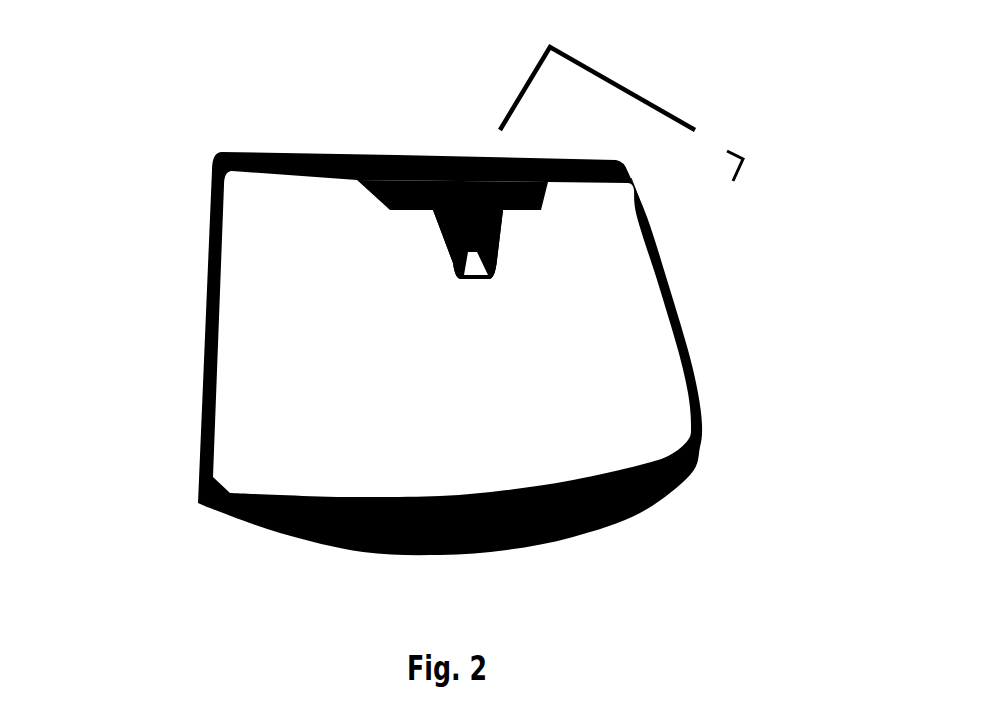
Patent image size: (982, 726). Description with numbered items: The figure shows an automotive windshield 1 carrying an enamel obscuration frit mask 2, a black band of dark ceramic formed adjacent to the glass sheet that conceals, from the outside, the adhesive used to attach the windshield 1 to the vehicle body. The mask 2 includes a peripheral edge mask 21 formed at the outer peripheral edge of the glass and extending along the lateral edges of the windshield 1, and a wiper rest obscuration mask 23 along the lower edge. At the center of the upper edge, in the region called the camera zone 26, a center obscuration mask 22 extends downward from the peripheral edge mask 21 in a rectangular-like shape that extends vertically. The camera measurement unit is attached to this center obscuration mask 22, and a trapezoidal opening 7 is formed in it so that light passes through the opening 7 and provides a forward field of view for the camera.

The automotive windshield 1 is at (710, 152).
The enamel obscuration frit mask 2 is at (212, 170).
The opening 7 is at (477, 257).
The peripheral edge mask 21 is at (667, 280).
The center obscuration mask 22 is at (433, 233).
The wiper rest obscuration mask 23 is at (687, 455).
The camera zone 26 is at (503, 245).